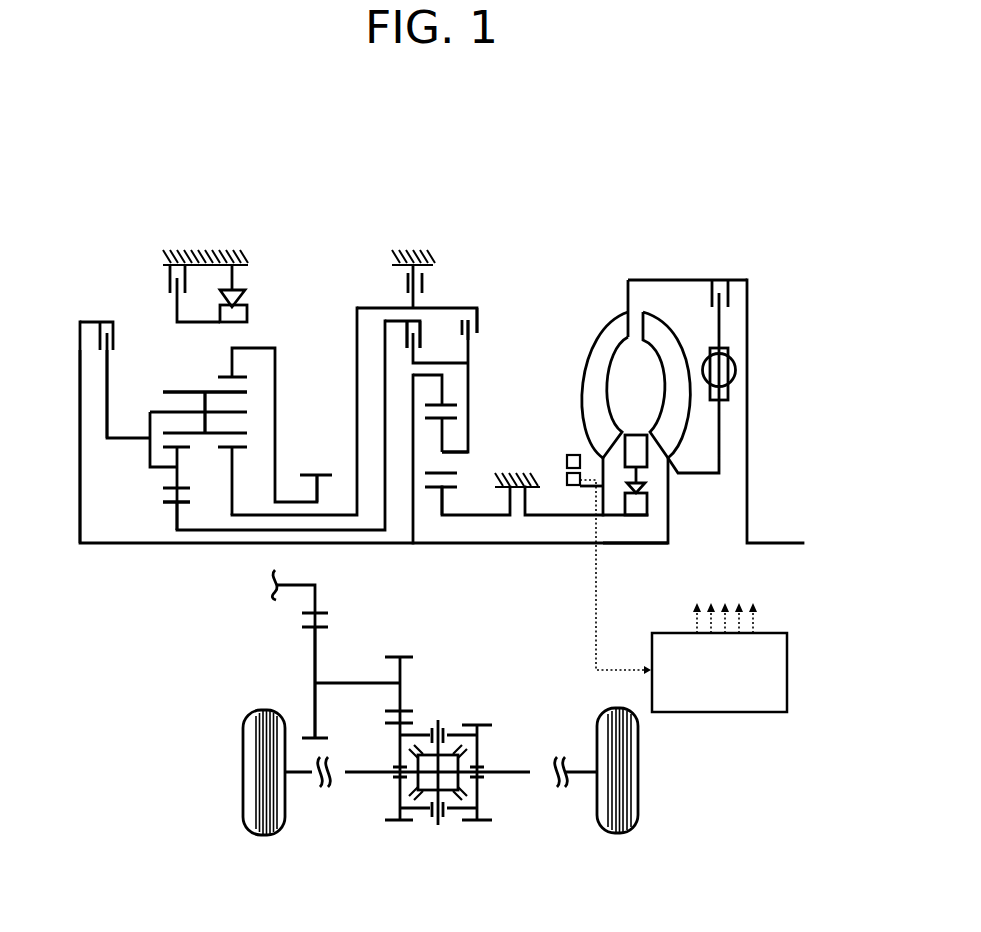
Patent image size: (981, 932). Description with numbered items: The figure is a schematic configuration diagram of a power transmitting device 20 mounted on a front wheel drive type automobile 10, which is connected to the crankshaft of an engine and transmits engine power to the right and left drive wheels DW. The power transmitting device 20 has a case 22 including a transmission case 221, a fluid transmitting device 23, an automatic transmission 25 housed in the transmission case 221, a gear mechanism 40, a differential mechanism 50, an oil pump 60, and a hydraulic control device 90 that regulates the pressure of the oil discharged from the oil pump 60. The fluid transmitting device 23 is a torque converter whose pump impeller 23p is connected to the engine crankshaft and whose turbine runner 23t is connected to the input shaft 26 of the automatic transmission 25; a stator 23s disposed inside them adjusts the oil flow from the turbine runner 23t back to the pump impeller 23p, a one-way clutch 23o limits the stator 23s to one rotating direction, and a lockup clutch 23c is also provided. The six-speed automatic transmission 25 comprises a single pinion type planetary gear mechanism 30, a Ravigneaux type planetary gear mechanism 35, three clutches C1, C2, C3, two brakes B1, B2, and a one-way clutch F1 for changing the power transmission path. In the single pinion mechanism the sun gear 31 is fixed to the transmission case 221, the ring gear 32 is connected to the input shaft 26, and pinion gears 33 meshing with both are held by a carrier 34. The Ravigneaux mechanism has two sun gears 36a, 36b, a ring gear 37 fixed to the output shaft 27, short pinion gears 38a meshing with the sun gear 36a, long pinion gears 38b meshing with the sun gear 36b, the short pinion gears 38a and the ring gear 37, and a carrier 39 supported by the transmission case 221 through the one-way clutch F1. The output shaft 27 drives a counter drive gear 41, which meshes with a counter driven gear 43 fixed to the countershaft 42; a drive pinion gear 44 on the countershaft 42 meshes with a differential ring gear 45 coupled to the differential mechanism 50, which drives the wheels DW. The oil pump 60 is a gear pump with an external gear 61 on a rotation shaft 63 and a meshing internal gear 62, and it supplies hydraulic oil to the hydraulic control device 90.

The automobile 10 is at (160, 727).
The power transmitting device 20 is at (518, 222).
The case 22 is at (185, 252).
The transmission case 221 is at (180, 237).
The fluid transmitting device 23 is at (618, 307).
The pump impeller 23p is at (607, 332).
The turbine runner 23t is at (678, 335).
The lockup clutch 23c is at (733, 325).
The stator 23s is at (653, 465).
The one-way clutch 23o is at (652, 508).
The automatic transmission 25 is at (327, 280).
The input shaft 26 is at (627, 543).
The output shaft 27 is at (293, 502).
The single pinion type planetary gear mechanism 30 is at (495, 387).
The sun gear 31 is at (433, 488).
The ring gear 32 is at (470, 388).
The pinion gears 33 is at (442, 452).
The carrier 34 is at (468, 405).
The Ravigneaux type planetary gear mechanism 35 is at (143, 497).
The sun gear 36a is at (170, 502).
The sun gear 36b is at (227, 448).
The ring gear 37 is at (243, 375).
The short pinion gears 38a is at (177, 472).
The long pinion gears 38b is at (163, 392).
The carrier 39 is at (107, 405).
The gear mechanism 40 is at (302, 648).
The counter drive gear 41 is at (307, 613).
The countershaft 42 is at (345, 682).
The counter driven gear 43 is at (315, 678).
The drive pinion gear 44 is at (410, 657).
The differential ring gear 45 is at (393, 820).
The differential mechanism 50 is at (503, 750).
The oil pump 60 is at (553, 482).
The external gear 61 is at (573, 487).
The internal gear 62 is at (570, 455).
The rotation shaft 63 is at (588, 487).
The hydraulic control device 90 is at (717, 712).
The brake B1 is at (425, 287).
The brake B2 is at (170, 285).
The clutch C1 is at (405, 337).
The clutch C2 is at (100, 337).
The clutch C3 is at (477, 328).
The one-way clutch F1 is at (247, 310).
The drive wheels DW is at (263, 835).